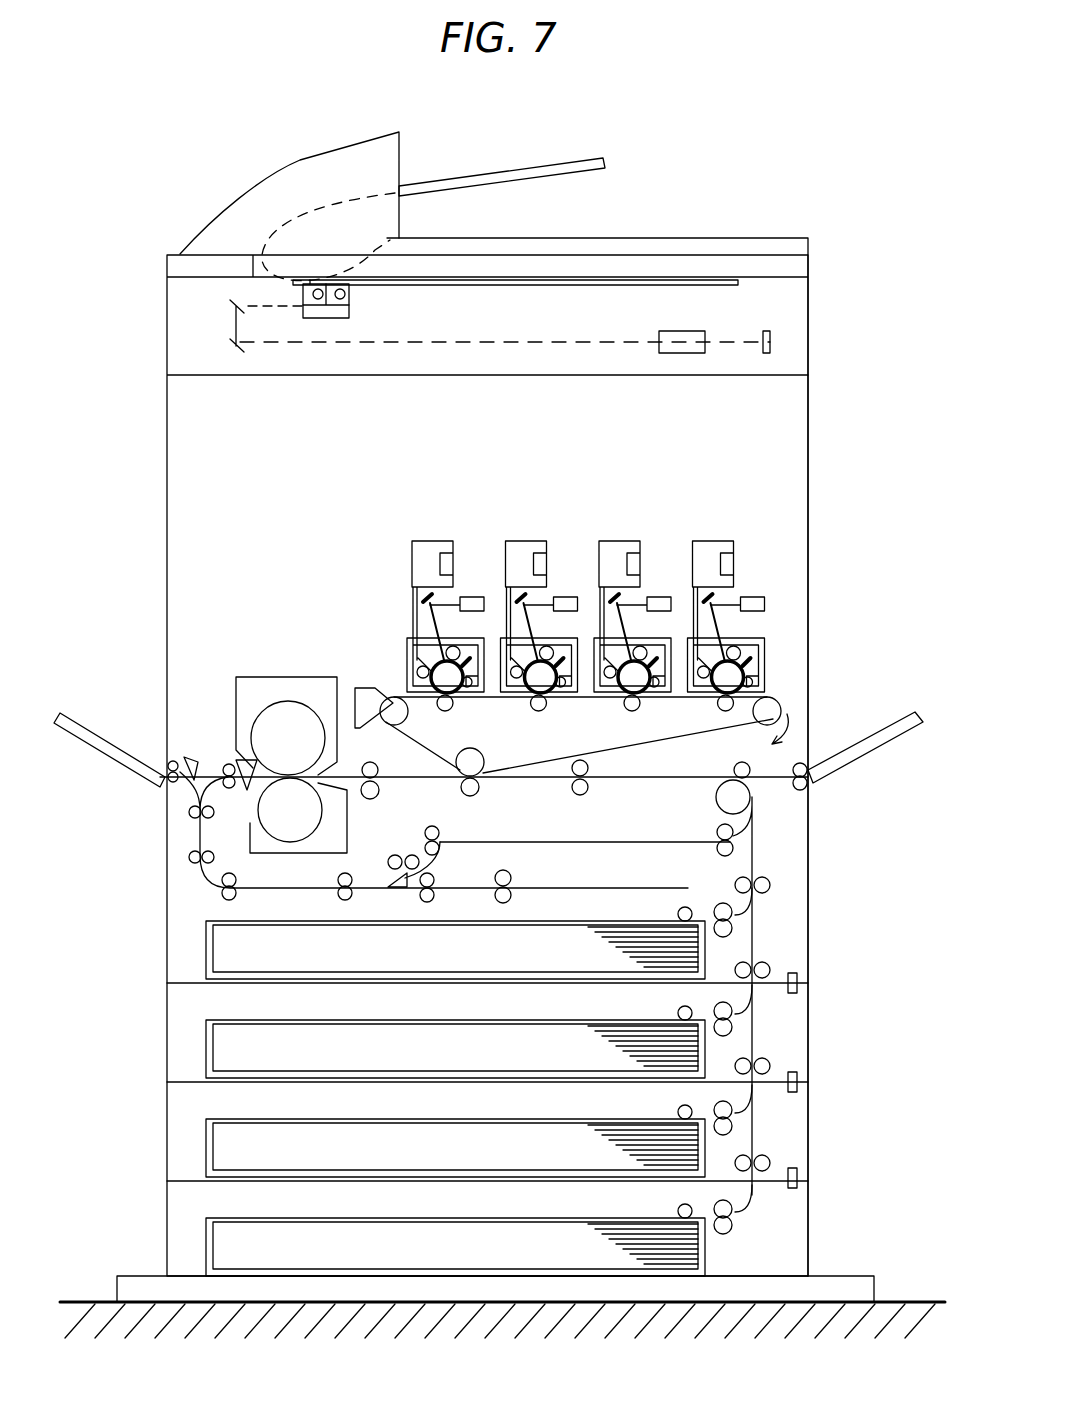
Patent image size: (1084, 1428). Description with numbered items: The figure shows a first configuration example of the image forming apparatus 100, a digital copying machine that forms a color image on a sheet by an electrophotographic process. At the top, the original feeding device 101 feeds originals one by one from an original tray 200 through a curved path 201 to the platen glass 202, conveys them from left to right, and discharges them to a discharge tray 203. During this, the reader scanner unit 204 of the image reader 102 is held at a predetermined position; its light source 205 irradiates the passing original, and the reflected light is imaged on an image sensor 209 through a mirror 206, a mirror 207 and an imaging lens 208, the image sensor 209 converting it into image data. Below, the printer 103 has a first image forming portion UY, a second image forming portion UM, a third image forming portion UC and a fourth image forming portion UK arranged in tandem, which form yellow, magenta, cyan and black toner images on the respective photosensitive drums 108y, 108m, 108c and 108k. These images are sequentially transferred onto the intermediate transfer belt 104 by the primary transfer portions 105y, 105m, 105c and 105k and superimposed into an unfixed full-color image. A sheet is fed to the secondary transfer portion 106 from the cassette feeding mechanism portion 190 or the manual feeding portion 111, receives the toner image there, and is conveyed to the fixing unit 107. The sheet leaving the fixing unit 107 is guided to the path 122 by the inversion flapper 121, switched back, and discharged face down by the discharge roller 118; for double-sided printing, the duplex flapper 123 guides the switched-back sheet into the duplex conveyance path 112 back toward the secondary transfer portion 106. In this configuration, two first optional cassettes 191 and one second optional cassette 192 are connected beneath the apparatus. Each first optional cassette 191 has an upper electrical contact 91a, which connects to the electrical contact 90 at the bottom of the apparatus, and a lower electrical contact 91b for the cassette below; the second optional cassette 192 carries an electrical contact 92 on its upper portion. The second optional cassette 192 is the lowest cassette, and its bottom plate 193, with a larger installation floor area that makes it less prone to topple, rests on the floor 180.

The image forming apparatus 100 is at (238, 106).
The original feeding device 101 is at (324, 152).
The original tray 200 is at (510, 170).
The curved path 201 is at (350, 204).
The platen glass 202 is at (312, 282).
The discharge tray 203 is at (540, 238).
The reader scanner unit 204 is at (340, 318).
The light source 205 is at (346, 294).
The mirror 206 is at (233, 306).
The mirror 207 is at (233, 344).
The imaging lens 208 is at (682, 332).
The image sensor 209 is at (766, 332).
The image reader 102 is at (805, 322).
The printer 103 is at (805, 448).
The first image forming portion UY is at (437, 528).
The second image forming portion UM is at (549, 609).
The third image forming portion UC is at (638, 609).
The fourth image forming portion UK is at (720, 604).
The photosensitive drum 108y is at (486, 666).
The photosensitive drum 108m is at (486, 666).
The photosensitive drum 108c is at (638, 617).
The photosensitive drum 108k is at (731, 617).
The primary transfer portion 105y is at (452, 712).
The primary transfer portion 105m is at (554, 724).
The primary transfer portion 105c is at (621, 724).
The primary transfer portion 105k is at (700, 719).
The intermediate transfer belt 104 is at (690, 746).
The secondary transfer portion 106 is at (478, 794).
The fixing unit 107 is at (270, 672).
The discharge roller 118 is at (176, 760).
The inversion flapper 121 is at (196, 764).
The manual feeding portion 111 is at (878, 732).
The path 122 is at (272, 888).
The duplex flapper 123 is at (392, 882).
The duplex conveyance path 112 is at (622, 842).
The cassette feeding mechanism portion 190 is at (575, 934).
The first optional cassette 191 is at (806, 1014).
The second optional cassette 192 is at (806, 1214).
The bottom plate 193 is at (810, 1276).
The floor 180 is at (905, 1302).
The electrical contact 90 is at (798, 972).
The electrical contact 91a is at (798, 986).
The electrical contact 91b is at (798, 1062).
The electrical contact 92 is at (798, 1182).